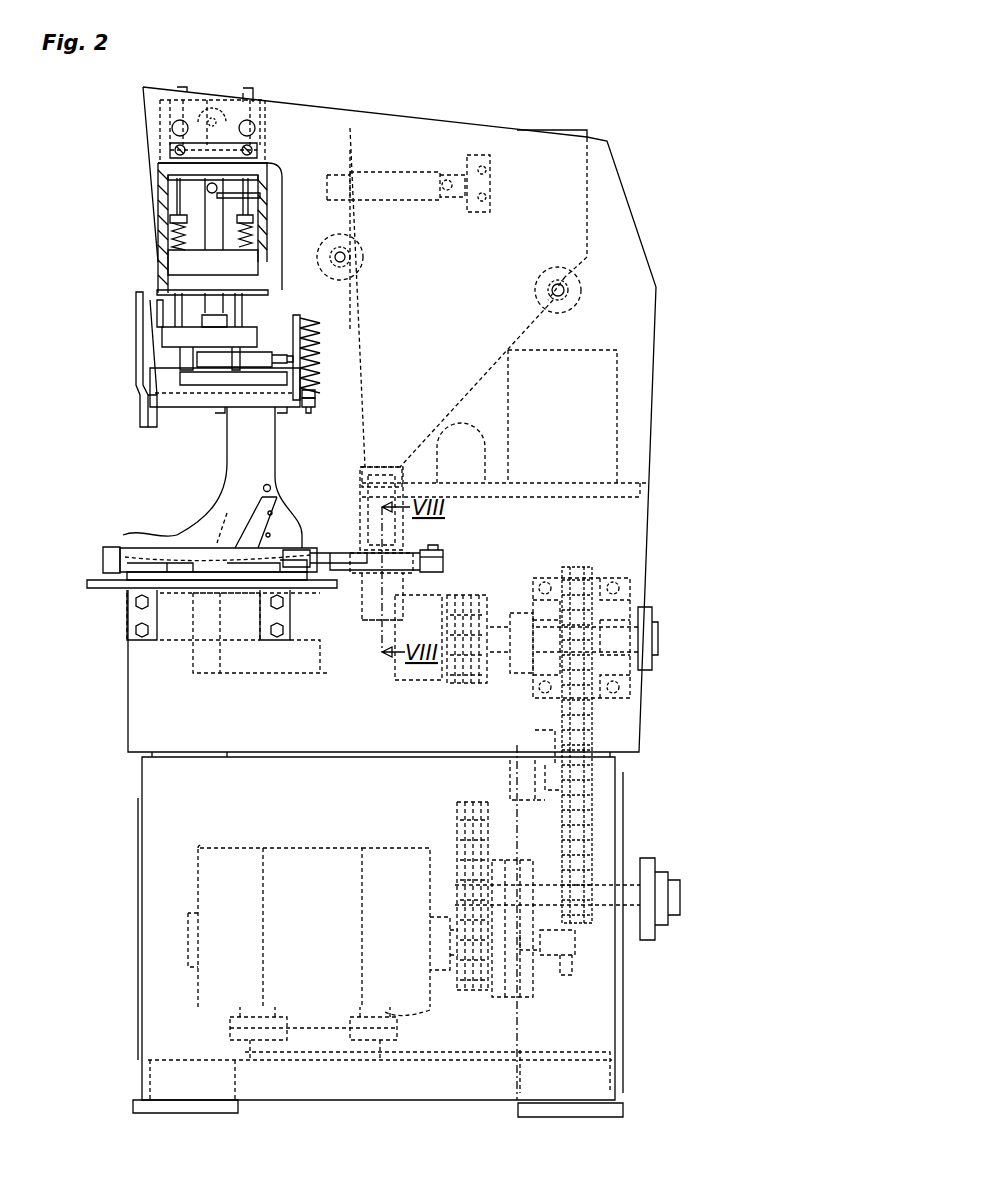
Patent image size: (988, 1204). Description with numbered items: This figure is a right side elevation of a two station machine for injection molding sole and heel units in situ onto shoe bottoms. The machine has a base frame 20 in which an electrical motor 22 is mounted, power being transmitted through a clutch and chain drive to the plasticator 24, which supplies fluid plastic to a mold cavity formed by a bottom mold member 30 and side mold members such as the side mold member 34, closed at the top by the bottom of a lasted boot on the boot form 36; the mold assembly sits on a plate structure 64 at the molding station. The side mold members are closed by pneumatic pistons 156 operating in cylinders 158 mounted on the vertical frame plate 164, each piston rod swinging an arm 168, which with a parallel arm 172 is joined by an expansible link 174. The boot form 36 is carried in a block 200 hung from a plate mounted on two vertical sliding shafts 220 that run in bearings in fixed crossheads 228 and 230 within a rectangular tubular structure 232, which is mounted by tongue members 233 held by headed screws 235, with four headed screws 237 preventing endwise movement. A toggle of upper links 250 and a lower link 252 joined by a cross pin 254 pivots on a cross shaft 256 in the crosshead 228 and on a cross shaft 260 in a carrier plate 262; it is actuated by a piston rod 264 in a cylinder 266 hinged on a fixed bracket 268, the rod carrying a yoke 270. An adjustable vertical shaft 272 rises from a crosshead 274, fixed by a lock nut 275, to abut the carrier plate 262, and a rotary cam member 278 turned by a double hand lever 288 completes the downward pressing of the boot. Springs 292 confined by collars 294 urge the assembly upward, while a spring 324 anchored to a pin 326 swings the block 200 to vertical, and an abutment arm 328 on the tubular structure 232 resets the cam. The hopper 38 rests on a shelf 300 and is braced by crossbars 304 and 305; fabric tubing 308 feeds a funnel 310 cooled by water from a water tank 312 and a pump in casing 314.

The base frame 20 is at (140, 1000).
The electrical motor 22 is at (197, 870).
The plasticator 24 is at (380, 678).
The bottom mold member 30 is at (233, 523).
The side mold member 34 is at (103, 555).
The boot form 36 is at (265, 472).
The hopper 38 is at (576, 272).
The base plate 64 is at (95, 580).
The pneumatic piston 156 is at (320, 546).
The cylinder 158 is at (370, 548).
The vertical frame plate 164 is at (656, 324).
The arm 168 is at (283, 590).
The arm 172 is at (125, 573).
The expansible link 174 is at (202, 557).
The block 200 is at (181, 408).
The vertical sliding shaft 220 is at (180, 87).
The crosshead 228 is at (285, 105).
The crosshead 230 is at (275, 285).
The tubular structure 232 is at (340, 246).
The tongue member 233 is at (228, 157).
The headed screw 235 is at (172, 150).
The headed screw 237 is at (172, 126).
The upper link 250 is at (158, 165).
The lower link 252 is at (205, 200).
The cross pin 254 is at (168, 186).
The cross shaft 256 is at (212, 108).
The cross shaft 260 is at (150, 300).
The carrier plate 262 is at (170, 282).
The piston rod 264 is at (333, 175).
The cylinder 266 is at (395, 172).
The fixed bracket 268 is at (490, 184).
The yoke 270 is at (225, 195).
The vertical shaft 272 is at (215, 305).
The crosshead 274 is at (300, 335).
The lock nut 275 is at (209, 347).
The rotary cam member 278 is at (272, 360).
The double hand lever 288 is at (140, 410).
The spring 292 is at (178, 262).
The collar 294 is at (176, 230).
The shelf 300 is at (588, 497).
The crossbar 304 is at (350, 270).
The crossbar 305 is at (540, 290).
The flexible fabric tubing 308 is at (405, 522).
The funnel 310 is at (415, 566).
The water tank 312 is at (568, 350).
The pump casing 314 is at (487, 437).
The spring 324 is at (315, 393).
The pin 326 is at (315, 403).
The abutment arm 328 is at (160, 322).